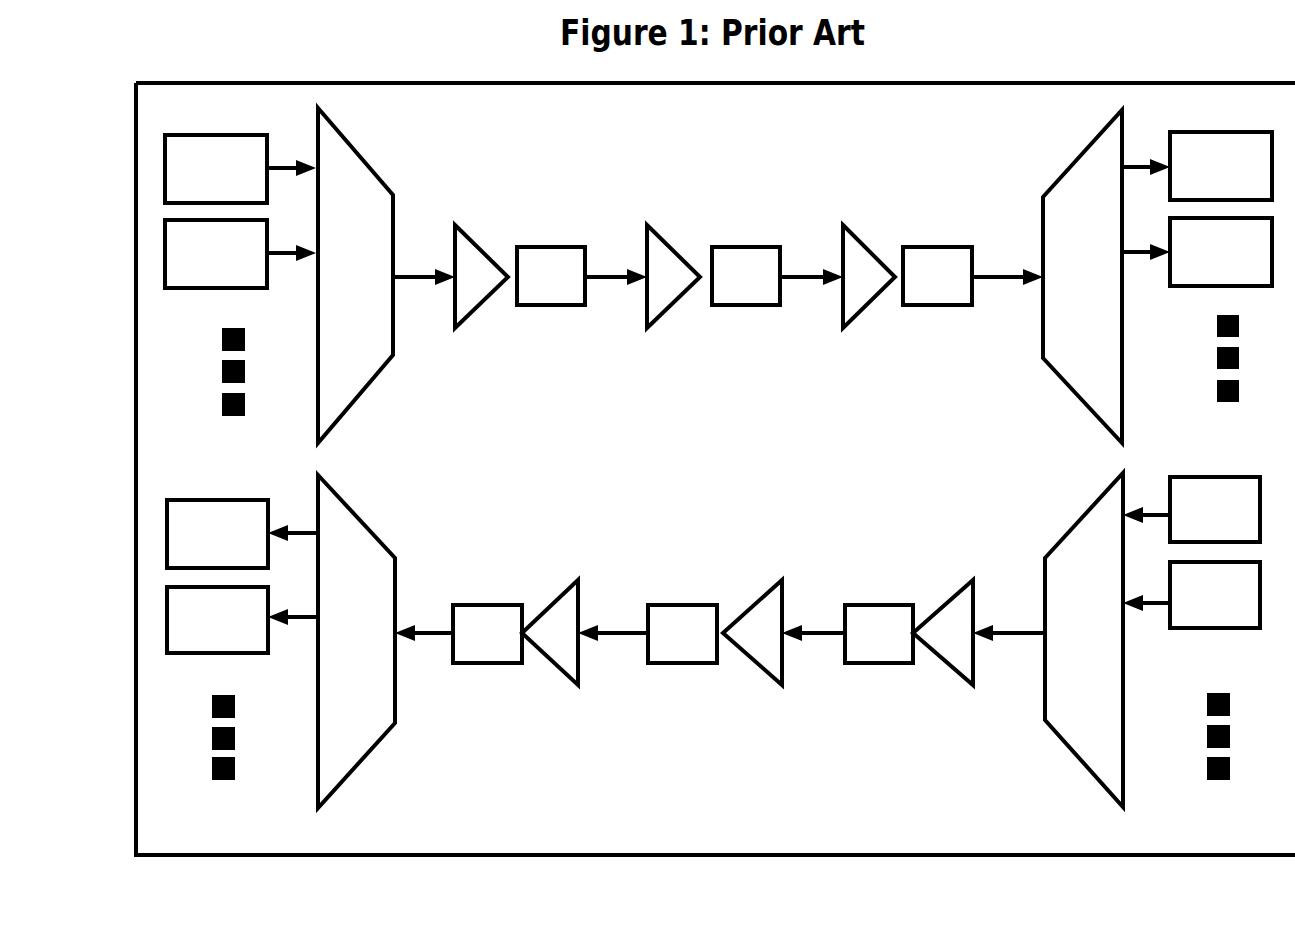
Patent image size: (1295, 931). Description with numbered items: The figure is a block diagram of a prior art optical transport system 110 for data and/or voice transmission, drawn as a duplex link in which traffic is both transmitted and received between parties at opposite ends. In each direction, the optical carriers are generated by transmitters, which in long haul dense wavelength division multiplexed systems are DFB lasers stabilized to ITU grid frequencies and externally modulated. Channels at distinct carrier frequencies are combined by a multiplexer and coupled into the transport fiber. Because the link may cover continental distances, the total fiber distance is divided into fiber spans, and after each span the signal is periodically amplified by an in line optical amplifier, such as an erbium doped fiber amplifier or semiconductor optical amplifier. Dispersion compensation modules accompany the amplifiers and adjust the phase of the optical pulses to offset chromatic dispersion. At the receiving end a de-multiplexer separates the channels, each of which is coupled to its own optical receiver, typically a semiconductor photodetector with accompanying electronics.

The optical transport system 110 is at (414, 866).